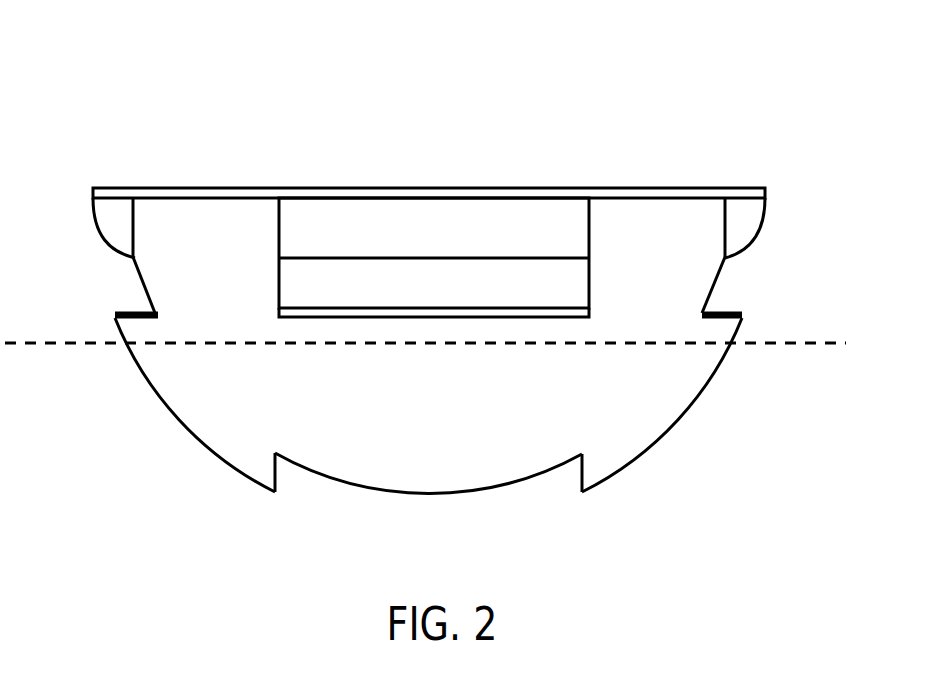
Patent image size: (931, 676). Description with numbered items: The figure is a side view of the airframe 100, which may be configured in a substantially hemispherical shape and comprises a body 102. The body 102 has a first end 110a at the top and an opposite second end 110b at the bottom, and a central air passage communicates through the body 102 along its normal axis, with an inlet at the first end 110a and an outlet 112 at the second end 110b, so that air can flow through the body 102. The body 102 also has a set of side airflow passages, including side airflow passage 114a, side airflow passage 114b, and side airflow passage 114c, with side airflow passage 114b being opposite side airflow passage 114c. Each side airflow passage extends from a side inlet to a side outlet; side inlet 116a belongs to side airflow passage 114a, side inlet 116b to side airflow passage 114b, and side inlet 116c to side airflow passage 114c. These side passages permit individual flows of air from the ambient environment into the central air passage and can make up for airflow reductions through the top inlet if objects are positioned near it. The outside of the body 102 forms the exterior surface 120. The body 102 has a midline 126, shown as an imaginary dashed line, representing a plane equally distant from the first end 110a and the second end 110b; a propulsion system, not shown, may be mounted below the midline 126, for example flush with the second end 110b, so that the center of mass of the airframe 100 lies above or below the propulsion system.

The airframe 100 is at (558, 99).
The body 102 is at (250, 192).
The first end 110a is at (712, 190).
The second end 110b is at (275, 493).
The outlet 112 is at (428, 490).
The side airflow passage 114a is at (543, 308).
The side airflow passage 114b is at (708, 305).
The side airflow passage 114c is at (137, 308).
The side inlet 116a is at (463, 318).
The side inlet 116b is at (725, 322).
The side inlet 116c is at (117, 318).
The exterior surface 120 is at (288, 386).
The midline 126 is at (842, 340).